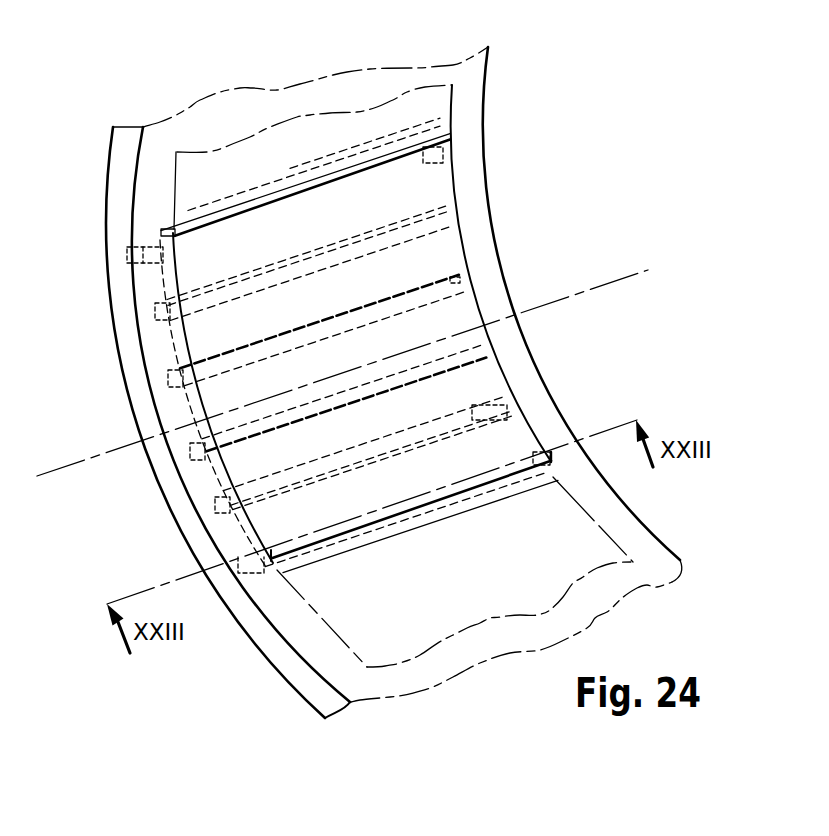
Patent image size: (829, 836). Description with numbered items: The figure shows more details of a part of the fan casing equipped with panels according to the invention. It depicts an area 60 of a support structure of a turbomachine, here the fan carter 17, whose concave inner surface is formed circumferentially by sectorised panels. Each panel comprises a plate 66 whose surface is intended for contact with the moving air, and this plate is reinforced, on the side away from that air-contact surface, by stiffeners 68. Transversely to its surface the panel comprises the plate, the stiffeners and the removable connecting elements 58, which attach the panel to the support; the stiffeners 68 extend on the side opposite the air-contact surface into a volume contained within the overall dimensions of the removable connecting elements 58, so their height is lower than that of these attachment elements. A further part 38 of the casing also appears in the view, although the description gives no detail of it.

The fan carter 17 is at (410, 60).
The rim band 38 is at (264, 670).
The removable connecting elements 58 is at (118, 255).
The area of a support 60 is at (197, 133).
The plate 66 is at (413, 180).
The stiffeners 68 is at (152, 312).